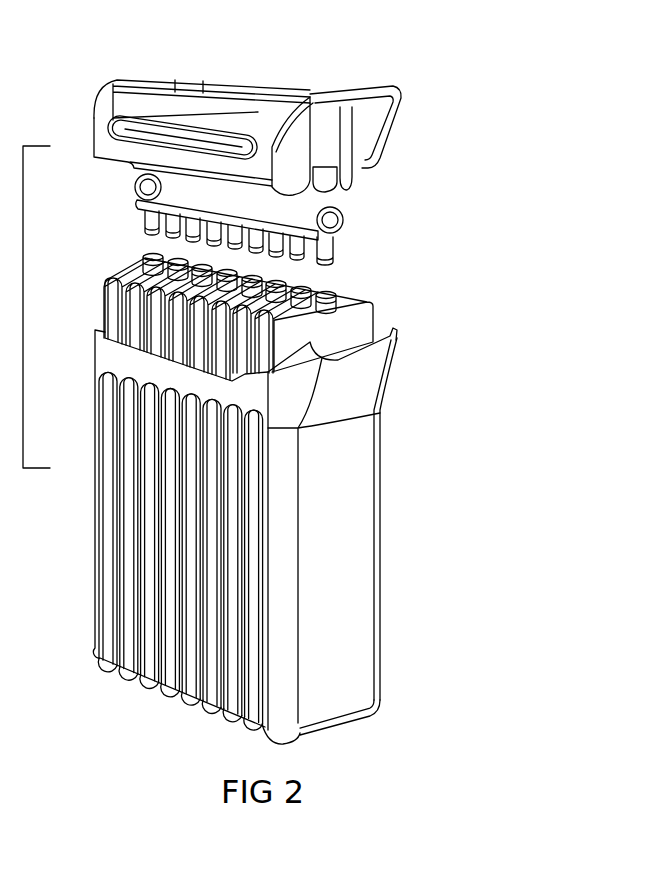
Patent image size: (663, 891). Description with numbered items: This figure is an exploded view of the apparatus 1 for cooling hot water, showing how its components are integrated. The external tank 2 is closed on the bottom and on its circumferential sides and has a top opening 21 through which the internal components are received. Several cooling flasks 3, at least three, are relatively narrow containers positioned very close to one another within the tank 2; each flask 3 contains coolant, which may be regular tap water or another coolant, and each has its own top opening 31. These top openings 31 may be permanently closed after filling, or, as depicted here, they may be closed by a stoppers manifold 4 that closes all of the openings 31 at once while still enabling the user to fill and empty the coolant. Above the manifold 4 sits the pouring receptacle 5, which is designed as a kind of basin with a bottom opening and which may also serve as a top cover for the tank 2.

The apparatus for cooling hot water 1 is at (483, 263).
The tank 2 is at (363, 458).
The top opening 21 is at (113, 322).
The cooling flasks 3 is at (362, 328).
The top opening 31 is at (330, 290).
The stoppers manifold 4 is at (333, 250).
The pouring receptacle 5 is at (348, 125).